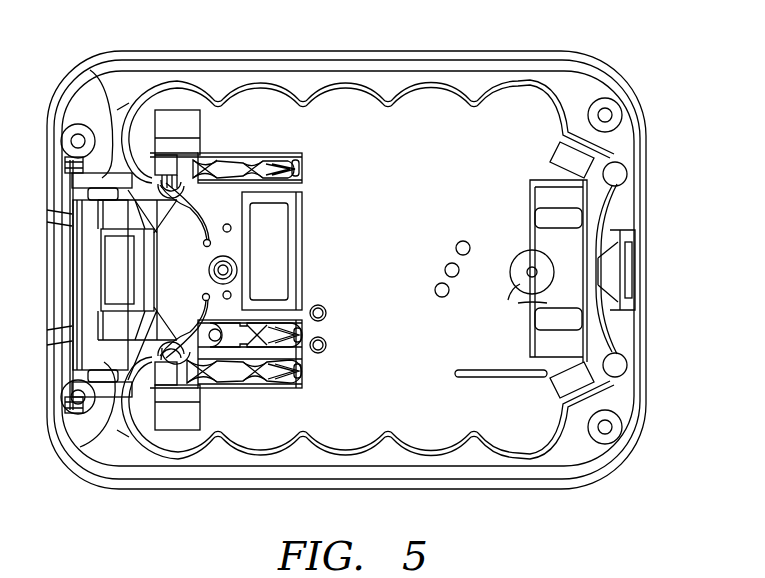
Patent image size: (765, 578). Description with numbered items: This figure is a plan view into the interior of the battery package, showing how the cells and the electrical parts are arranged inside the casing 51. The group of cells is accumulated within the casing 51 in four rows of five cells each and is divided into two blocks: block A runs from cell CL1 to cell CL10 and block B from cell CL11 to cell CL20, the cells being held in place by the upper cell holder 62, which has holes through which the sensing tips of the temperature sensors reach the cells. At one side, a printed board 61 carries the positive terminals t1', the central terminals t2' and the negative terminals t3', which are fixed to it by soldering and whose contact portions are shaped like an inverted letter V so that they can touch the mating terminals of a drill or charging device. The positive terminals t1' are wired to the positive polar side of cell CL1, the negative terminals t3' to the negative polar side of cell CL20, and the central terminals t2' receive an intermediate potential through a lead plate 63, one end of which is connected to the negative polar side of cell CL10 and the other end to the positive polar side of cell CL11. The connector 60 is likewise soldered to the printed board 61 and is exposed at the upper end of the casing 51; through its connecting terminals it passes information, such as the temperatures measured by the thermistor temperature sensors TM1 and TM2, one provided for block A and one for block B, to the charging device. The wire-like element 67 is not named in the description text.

The casing 51 is at (345, 50).
The upper cell holder 62 is at (435, 103).
The spring wire 67 is at (90, 70).
The cell CL20 is at (177, 122).
The temperature sensor TM2 is at (181, 183).
The negative terminals t3' is at (244, 143).
The printed board 61 is at (303, 167).
The connector 60 is at (270, 262).
The central terminals t2' is at (276, 336).
The positive terminals t1' is at (244, 399).
The temperature sensor TM1 is at (190, 380).
The cell CL1 is at (190, 415).
The cell CL11 is at (566, 197).
The cell CL10 is at (570, 342).
The lead plate 63 is at (522, 296).